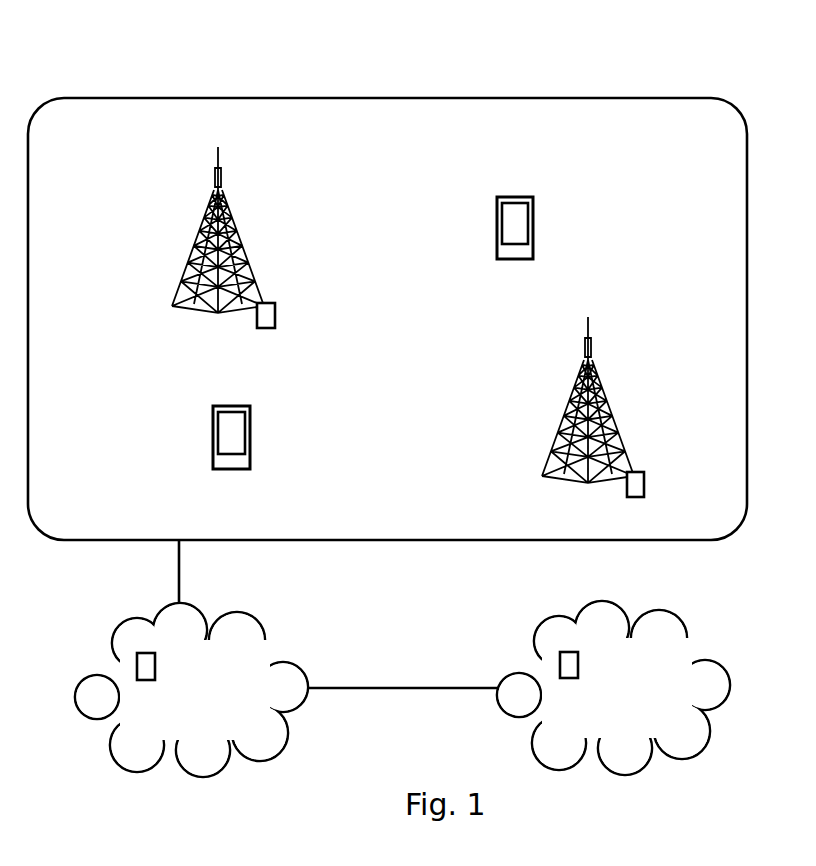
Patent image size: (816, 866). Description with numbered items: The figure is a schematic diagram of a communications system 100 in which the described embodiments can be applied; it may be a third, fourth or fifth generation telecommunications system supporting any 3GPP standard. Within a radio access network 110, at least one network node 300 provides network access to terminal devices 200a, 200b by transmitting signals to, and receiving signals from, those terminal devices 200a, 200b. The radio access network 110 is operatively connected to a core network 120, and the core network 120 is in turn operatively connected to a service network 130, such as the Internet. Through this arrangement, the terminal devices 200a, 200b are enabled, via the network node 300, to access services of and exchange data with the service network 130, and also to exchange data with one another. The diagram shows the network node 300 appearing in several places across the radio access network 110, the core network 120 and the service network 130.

The communications system 100 is at (128, 57).
The radio access network 110 is at (713, 140).
The core network 120 is at (219, 710).
The service network 130 is at (642, 710).
The terminal device 200a is at (250, 440).
The terminal device 200b is at (533, 230).
The network node 300 is at (275, 311).